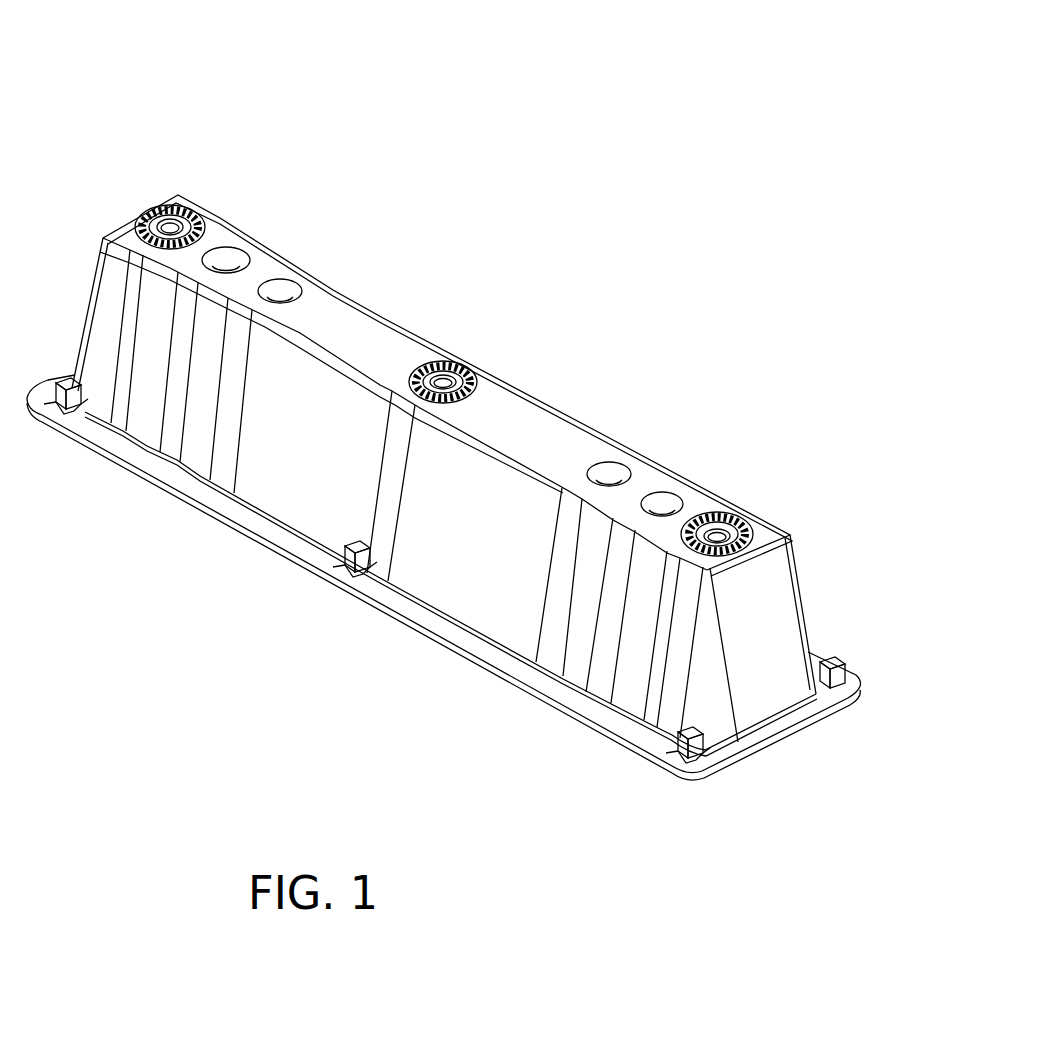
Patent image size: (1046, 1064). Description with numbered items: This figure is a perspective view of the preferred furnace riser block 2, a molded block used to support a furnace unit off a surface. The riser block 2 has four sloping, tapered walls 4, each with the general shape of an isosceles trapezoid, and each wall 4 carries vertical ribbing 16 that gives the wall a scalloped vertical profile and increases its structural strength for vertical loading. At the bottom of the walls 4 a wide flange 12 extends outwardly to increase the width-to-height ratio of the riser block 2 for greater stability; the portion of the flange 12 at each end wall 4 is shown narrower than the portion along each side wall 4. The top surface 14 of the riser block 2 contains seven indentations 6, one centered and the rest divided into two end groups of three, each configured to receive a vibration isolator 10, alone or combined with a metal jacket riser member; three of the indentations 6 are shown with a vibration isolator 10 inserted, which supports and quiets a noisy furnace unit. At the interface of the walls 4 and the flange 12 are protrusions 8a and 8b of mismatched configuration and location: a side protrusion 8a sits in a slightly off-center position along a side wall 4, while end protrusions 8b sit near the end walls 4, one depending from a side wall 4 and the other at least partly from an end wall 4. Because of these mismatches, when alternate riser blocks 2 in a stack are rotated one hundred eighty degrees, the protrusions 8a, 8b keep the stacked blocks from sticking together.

The riser block 2 is at (621, 77).
The wall 4 is at (252, 490).
The indentation 6 is at (626, 455).
The side protrusion 8a is at (334, 599).
The end protrusion 8b is at (825, 713).
The vibration isolator 10 is at (212, 194).
The flange 12 is at (471, 684).
The top surface 14 is at (402, 314).
The vertical ribbing 16 is at (612, 660).